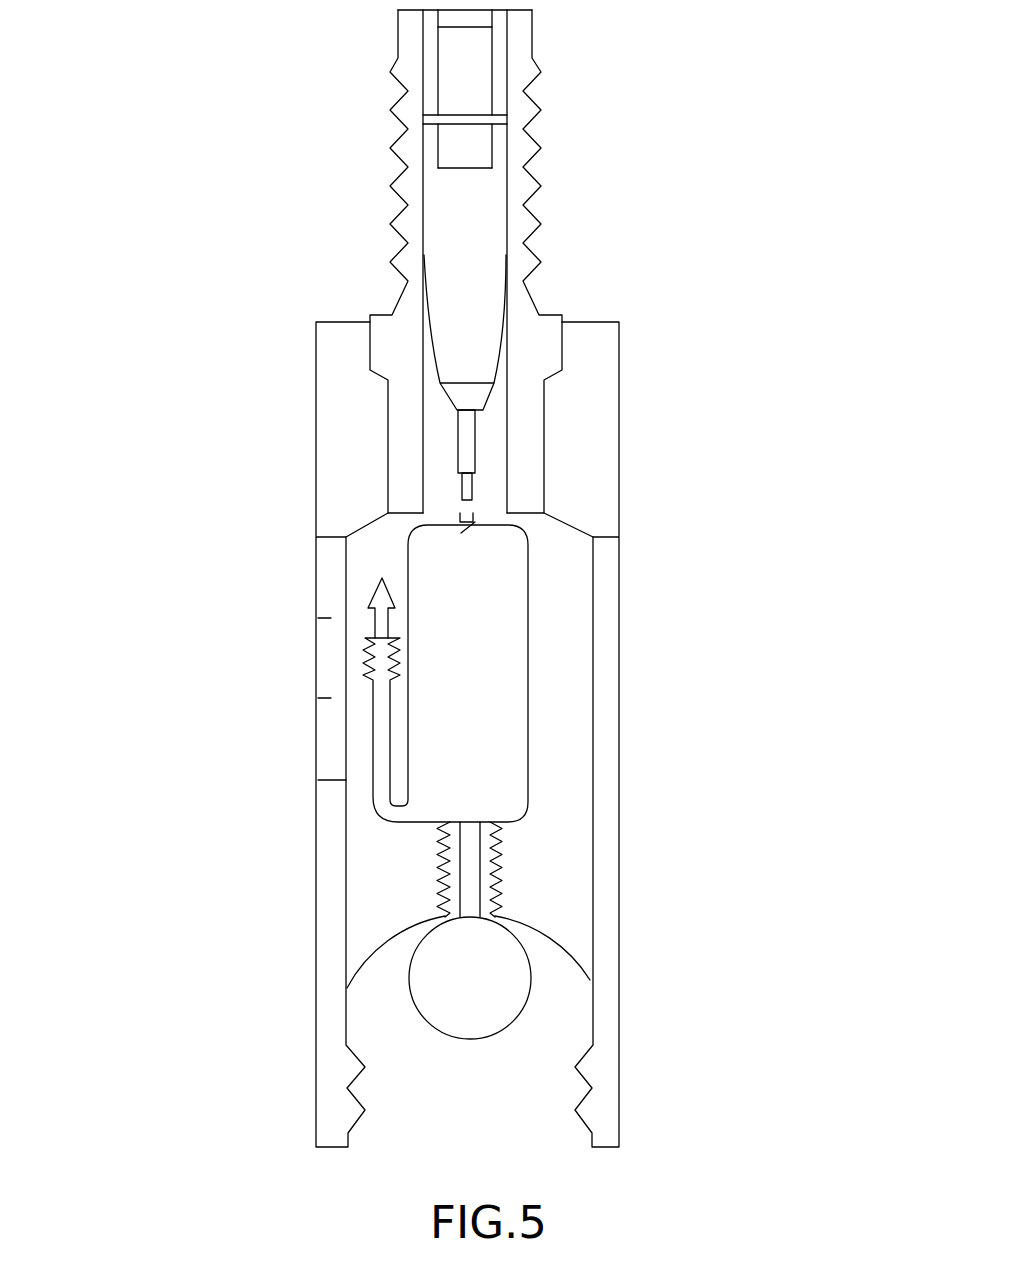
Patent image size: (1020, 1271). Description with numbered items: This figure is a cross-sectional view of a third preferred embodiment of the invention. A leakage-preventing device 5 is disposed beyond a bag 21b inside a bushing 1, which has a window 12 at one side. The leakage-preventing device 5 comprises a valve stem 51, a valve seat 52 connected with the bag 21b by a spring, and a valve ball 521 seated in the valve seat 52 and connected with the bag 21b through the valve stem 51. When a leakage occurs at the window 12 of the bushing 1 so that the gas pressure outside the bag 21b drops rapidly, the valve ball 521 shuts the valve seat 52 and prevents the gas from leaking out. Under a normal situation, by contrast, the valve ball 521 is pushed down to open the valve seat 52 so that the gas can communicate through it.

The bushing 1 is at (658, 487).
The window 12 is at (331, 587).
The bag 21b is at (528, 672).
The leakage-preventing device 5 is at (466, 960).
The valve stem 51 is at (448, 868).
The valve seat 52 is at (388, 943).
The valve ball 521 is at (533, 978).